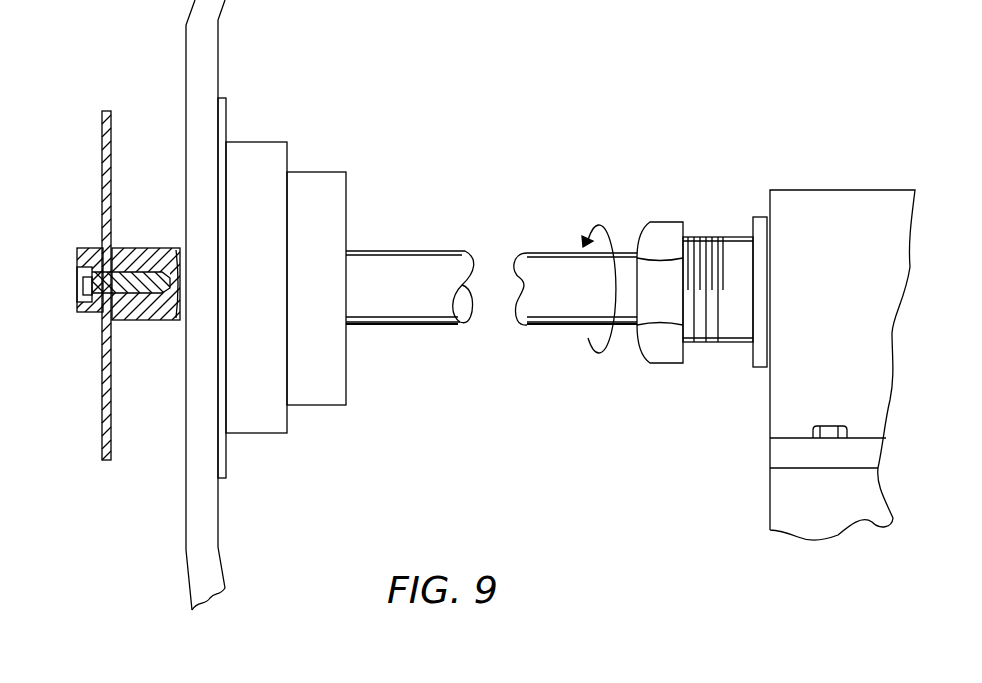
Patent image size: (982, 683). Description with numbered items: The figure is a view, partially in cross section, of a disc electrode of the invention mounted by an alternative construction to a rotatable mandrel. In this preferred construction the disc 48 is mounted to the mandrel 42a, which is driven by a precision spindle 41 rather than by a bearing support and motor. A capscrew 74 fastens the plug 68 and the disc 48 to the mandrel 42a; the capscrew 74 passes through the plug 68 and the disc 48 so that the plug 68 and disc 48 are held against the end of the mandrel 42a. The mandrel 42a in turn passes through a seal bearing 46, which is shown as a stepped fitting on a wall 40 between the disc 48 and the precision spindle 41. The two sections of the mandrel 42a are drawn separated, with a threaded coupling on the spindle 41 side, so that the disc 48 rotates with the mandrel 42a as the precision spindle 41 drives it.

The panel wall 40 is at (186, 25).
The disc 48 is at (103, 170).
The plug 68 is at (88, 250).
The capscrew 74 is at (80, 275).
The seal bearing 46 is at (292, 168).
The mandrel 42a is at (440, 252).
The precision spindle 41 is at (834, 190).